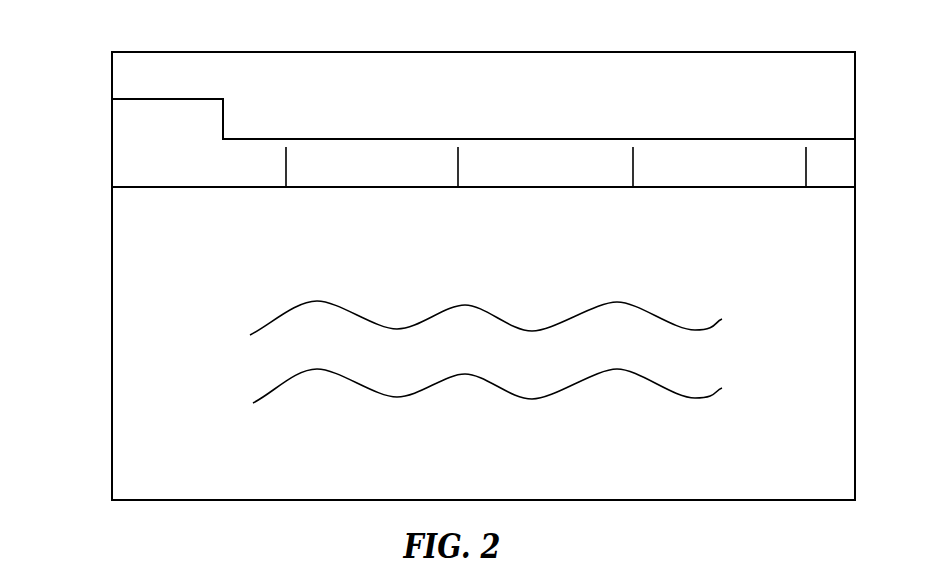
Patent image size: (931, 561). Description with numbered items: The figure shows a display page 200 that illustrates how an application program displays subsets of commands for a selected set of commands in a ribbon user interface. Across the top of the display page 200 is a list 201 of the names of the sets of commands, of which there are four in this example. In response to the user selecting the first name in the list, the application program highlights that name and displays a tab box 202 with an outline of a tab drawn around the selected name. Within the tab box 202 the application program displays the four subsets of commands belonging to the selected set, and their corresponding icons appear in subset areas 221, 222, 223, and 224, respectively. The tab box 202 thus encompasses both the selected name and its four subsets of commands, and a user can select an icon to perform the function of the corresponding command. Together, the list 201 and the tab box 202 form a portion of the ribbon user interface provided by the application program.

The display page 200 is at (483, 263).
The list 201 is at (110, 125).
The tab box 202 is at (116, 168).
The subset area 221 is at (199, 187).
The subset area 222 is at (373, 187).
The subset area 223 is at (546, 187).
The subset area 224 is at (720, 187).